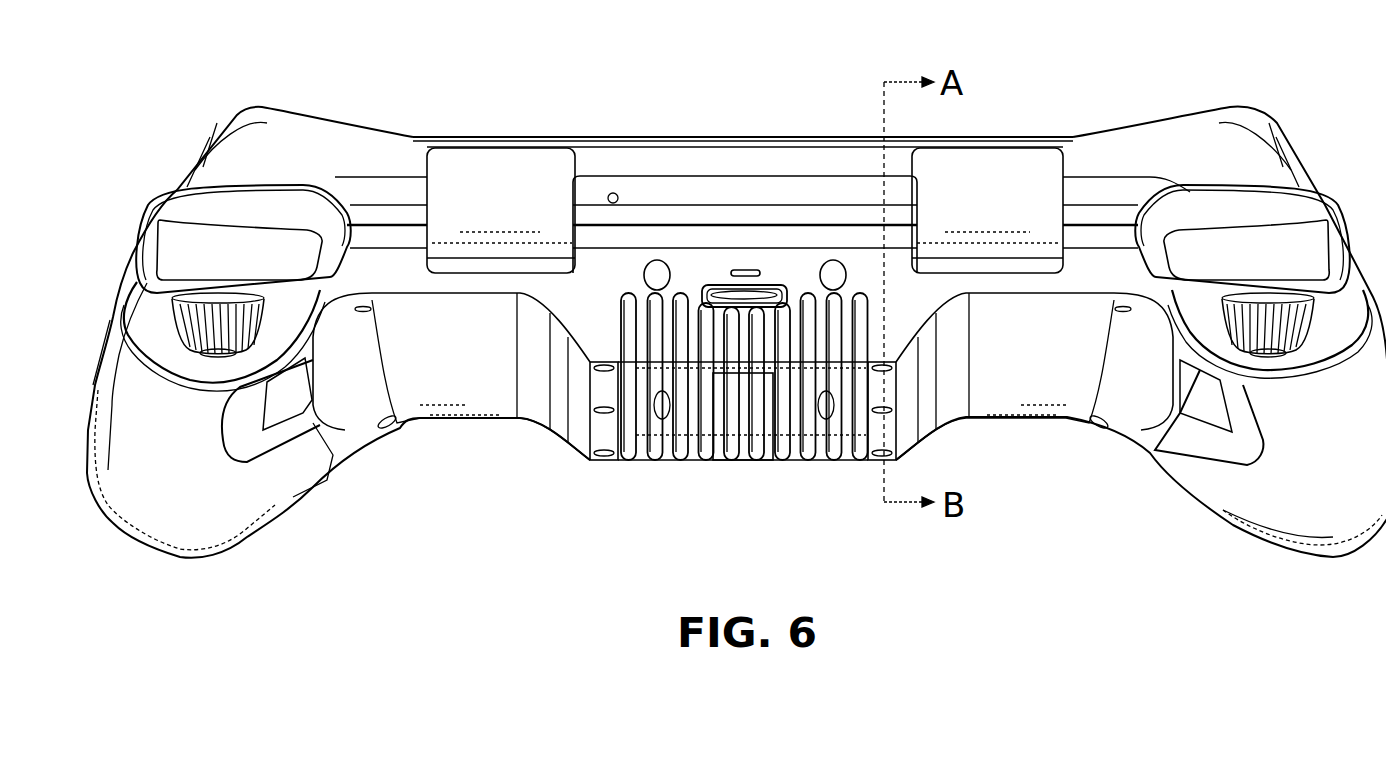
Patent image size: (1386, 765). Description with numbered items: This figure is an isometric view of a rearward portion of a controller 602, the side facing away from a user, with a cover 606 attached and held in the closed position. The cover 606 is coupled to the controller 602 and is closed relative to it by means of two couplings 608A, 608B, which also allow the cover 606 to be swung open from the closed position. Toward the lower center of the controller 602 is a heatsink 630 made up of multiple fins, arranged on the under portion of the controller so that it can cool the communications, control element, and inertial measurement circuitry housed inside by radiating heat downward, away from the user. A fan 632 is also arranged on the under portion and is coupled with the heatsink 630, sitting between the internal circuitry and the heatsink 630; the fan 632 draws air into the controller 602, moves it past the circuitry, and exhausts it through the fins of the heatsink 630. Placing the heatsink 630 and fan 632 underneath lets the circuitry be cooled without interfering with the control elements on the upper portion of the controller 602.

The cover 606 is at (197, 149).
The controller 602 is at (95, 388).
The coupling 608B is at (504, 178).
The coupling 608A is at (1011, 175).
The heatsink 630 is at (642, 460).
The fan 632 is at (759, 462).